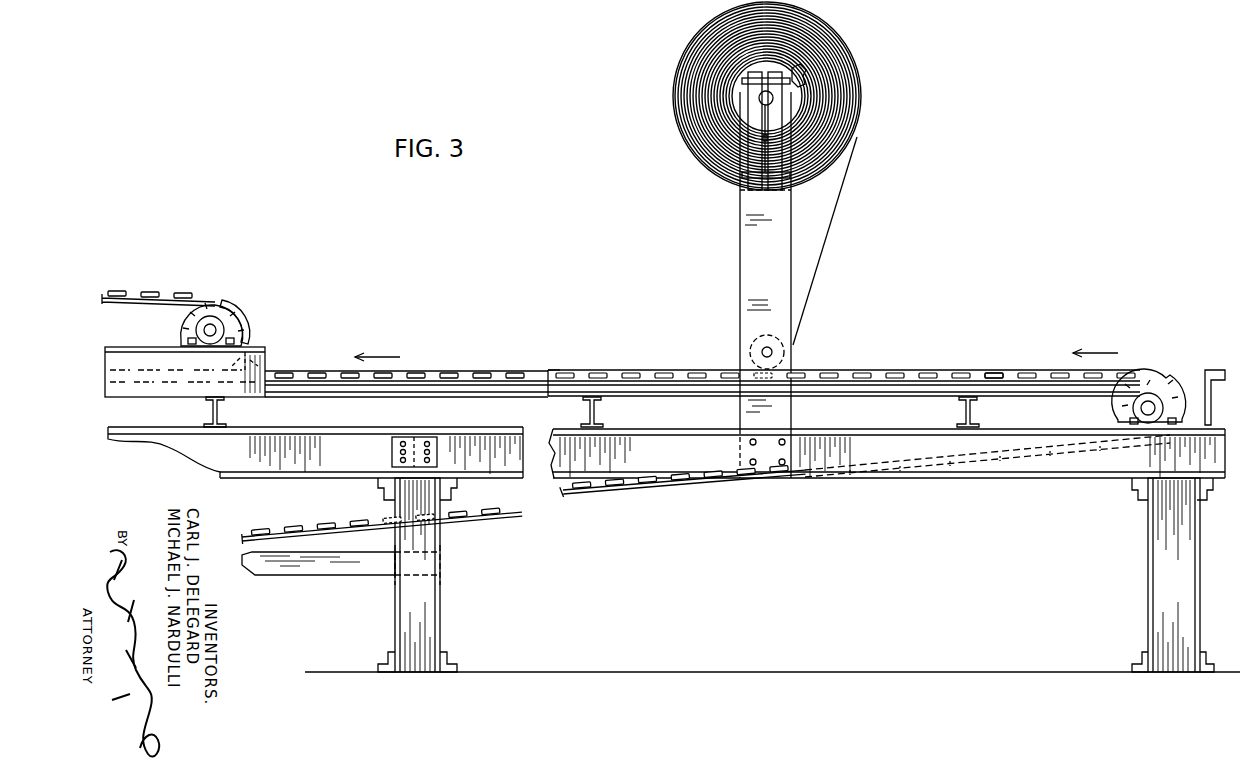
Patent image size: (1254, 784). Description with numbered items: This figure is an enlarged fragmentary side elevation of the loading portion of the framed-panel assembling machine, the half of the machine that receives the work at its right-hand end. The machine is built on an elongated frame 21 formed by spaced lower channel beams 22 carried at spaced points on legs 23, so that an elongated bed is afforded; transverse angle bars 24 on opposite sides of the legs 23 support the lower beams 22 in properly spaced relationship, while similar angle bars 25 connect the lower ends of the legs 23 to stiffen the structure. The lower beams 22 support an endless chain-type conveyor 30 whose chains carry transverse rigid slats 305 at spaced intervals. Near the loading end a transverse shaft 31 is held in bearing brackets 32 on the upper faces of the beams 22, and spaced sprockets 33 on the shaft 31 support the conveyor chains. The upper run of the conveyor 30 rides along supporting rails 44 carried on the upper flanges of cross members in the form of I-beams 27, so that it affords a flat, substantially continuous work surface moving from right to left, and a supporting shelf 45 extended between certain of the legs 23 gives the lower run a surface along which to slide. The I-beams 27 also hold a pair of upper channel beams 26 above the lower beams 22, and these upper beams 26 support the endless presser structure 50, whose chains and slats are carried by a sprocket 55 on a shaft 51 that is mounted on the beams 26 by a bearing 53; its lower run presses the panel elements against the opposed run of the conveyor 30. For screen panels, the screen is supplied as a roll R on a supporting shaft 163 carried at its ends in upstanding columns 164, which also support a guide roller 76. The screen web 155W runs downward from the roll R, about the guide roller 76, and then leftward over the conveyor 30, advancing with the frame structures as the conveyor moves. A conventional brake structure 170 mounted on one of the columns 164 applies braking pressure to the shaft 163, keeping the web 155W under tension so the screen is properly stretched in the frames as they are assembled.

The roll R is at (848, 85).
The screen web 155W is at (838, 212).
The supporting shaft 163 is at (758, 100).
The brake structure 170 is at (752, 138).
The upstanding columns 164 is at (780, 270).
The guide roller 76 is at (750, 346).
The chain-type conveyor 30 is at (890, 368).
The transverse rigid slats 305 is at (988, 370).
The sprockets 33 is at (1142, 386).
The transverse shaft 31 is at (1150, 404).
The bearing brackets 32 is at (1186, 385).
The presser structure 50 is at (150, 283).
The sprocket 55 is at (214, 312).
The shaft 51 is at (214, 326).
The bearing 53 is at (250, 320).
The upper channel beams 26 is at (266, 357).
The supporting rails 44 is at (462, 390).
The I-beams 27 is at (224, 412).
The transverse angle bars 24 is at (452, 492).
The legs 23 is at (432, 605).
The angle bars 25 is at (458, 668).
The supporting shelf 45 is at (348, 573).
The elongated frame 21 is at (940, 486).
The lower channel beams 22 is at (1054, 474).